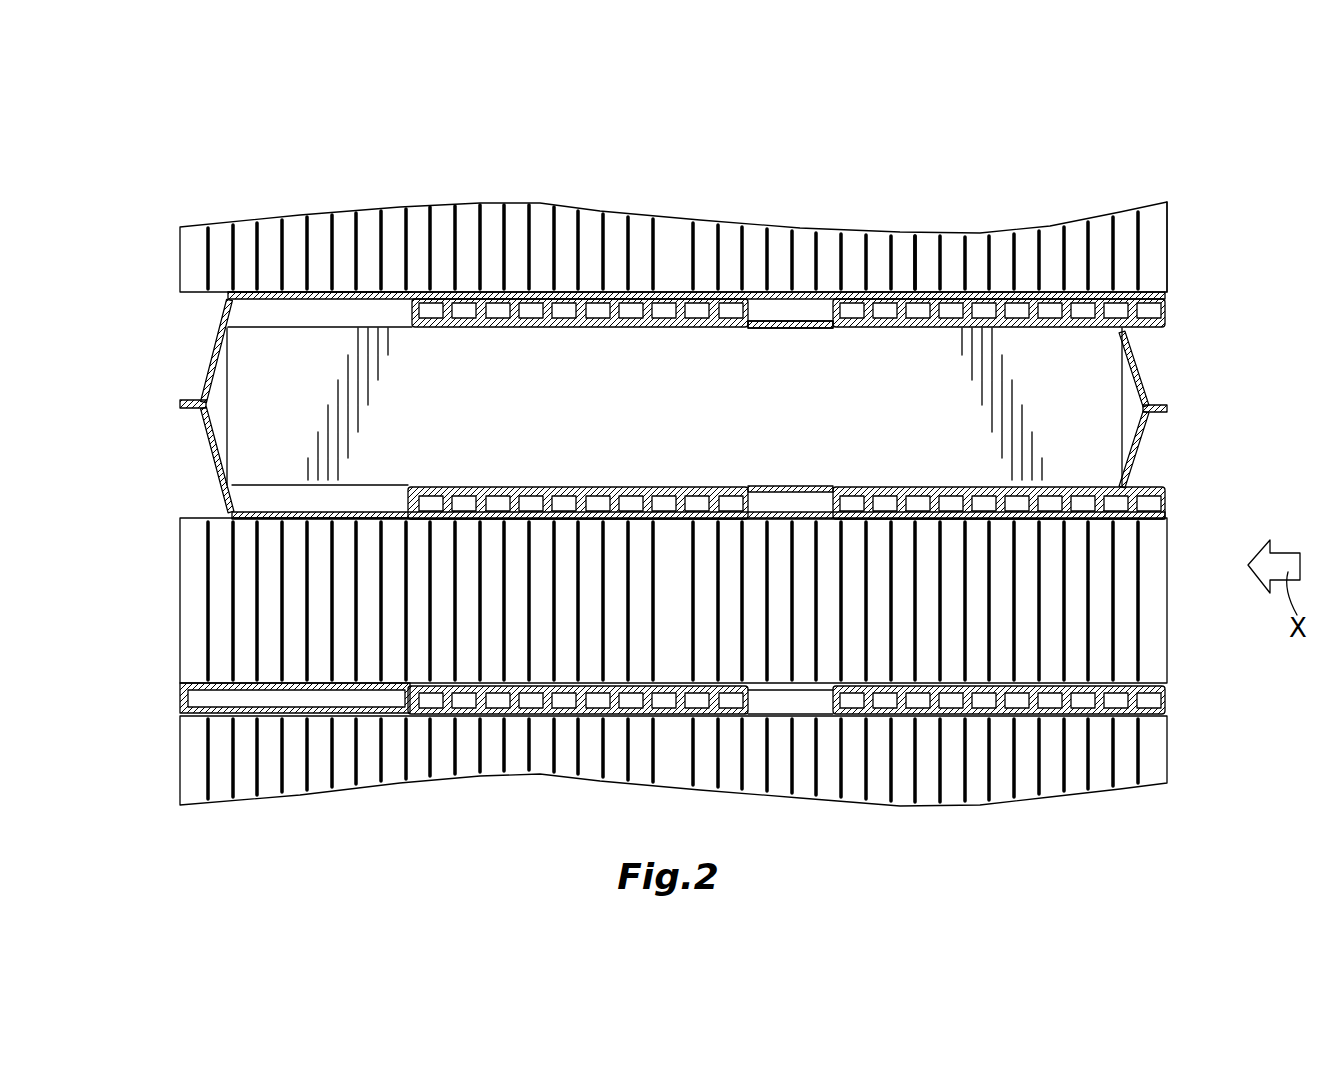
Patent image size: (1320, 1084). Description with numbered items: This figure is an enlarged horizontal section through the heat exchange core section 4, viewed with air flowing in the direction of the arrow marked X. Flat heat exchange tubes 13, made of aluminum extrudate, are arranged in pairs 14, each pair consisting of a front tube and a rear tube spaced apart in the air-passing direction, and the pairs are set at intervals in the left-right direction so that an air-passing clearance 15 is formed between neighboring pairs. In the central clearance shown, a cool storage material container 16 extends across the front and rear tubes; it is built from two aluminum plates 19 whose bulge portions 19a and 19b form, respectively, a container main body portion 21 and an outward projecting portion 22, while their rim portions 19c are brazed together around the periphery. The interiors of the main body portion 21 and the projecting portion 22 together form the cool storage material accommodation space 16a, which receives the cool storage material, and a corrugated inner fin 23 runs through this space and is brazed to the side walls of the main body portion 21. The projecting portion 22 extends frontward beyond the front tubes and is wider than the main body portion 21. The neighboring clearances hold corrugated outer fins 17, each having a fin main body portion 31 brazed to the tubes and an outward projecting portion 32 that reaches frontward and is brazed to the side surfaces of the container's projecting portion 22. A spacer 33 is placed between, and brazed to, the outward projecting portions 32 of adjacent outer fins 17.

The heat exchange core section 4 is at (1242, 262).
The heat exchange tube 13 is at (770, 318).
The pair of heat exchange tubes 14 is at (752, 563).
The air-passing clearance 15 is at (713, 220).
The cool storage material container 16 is at (662, 361).
The cool storage material accommodation space 16a is at (598, 348).
The corrugated outer fin 17 is at (1025, 235).
The aluminum plate 19 is at (1162, 407).
The bulge portion 19a is at (1138, 372).
The bulge portion 19b is at (255, 292).
The rim portion 19c is at (180, 404).
The container main body portion 21 is at (806, 328).
The outward projecting portion 22 is at (216, 452).
The inner fin 23 is at (230, 385).
The fin main body portion 31 is at (905, 245).
The outward projecting portion 32 is at (297, 222).
The spacer 33 is at (185, 698).